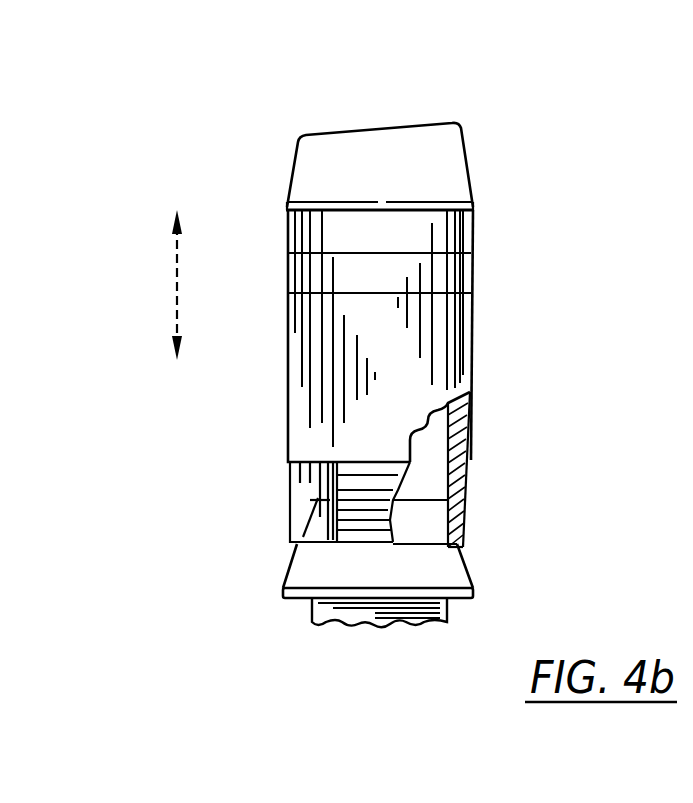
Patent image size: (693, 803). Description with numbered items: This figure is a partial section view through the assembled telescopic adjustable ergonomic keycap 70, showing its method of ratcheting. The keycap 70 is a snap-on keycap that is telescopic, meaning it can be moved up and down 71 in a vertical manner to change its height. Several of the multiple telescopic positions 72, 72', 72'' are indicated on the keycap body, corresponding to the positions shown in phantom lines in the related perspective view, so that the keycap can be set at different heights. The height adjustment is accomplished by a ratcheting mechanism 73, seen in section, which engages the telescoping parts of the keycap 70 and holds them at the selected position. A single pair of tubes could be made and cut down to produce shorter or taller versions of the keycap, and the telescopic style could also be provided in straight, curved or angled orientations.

The adjustable ergonomic keycap 70 is at (247, 147).
The up and down movement 71 is at (157, 285).
The position 72 is at (448, 336).
The position 72' is at (446, 220).
The position 72'' is at (447, 155).
The ratcheting mechanism 73 is at (380, 487).